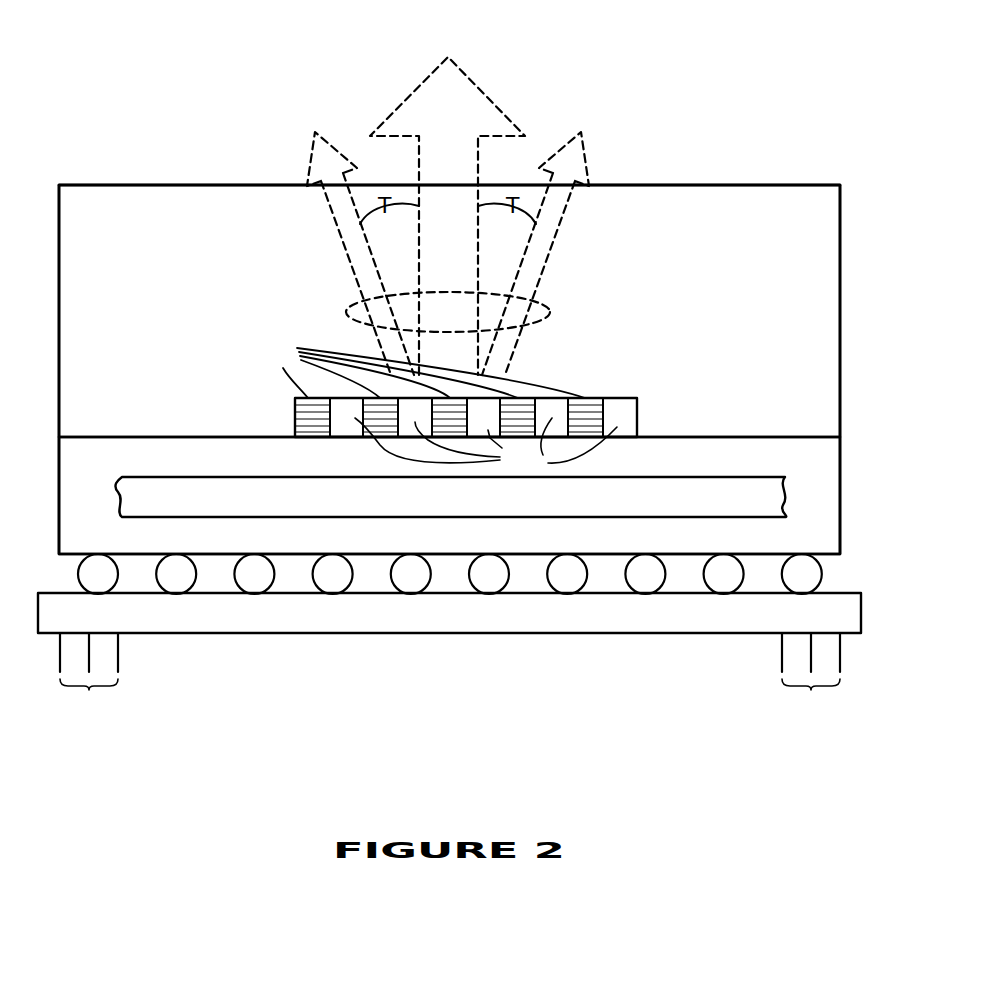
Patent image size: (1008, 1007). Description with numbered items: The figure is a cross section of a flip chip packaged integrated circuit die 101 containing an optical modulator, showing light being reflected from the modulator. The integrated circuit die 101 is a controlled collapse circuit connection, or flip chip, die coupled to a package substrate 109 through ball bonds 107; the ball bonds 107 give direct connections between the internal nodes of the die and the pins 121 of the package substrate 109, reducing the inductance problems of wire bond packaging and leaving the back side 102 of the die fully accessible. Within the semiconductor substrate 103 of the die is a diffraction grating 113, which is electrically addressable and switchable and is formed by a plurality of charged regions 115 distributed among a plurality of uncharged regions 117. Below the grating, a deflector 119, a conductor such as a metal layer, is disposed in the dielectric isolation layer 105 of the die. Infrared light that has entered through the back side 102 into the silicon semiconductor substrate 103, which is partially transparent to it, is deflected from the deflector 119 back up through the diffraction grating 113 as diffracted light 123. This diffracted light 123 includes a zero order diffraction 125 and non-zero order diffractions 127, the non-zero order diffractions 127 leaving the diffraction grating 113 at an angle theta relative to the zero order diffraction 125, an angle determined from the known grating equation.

The integrated circuit die 101 is at (878, 118).
The back side 102 is at (743, 185).
The semiconductor substrate 103 is at (828, 262).
The dielectric isolation layer 105 is at (830, 457).
The ball bonds 107 is at (492, 582).
The package substrate 109 is at (852, 612).
The diffraction grating 113 is at (608, 385).
The charged regions 115 is at (418, 371).
The uncharged regions 117 is at (486, 444).
The deflector 119 is at (713, 477).
The pins 121 is at (450, 677).
The diffracted light 123 is at (550, 308).
The zero order diffraction 125 is at (483, 77).
The non-zero order diffractions 127 is at (300, 153).